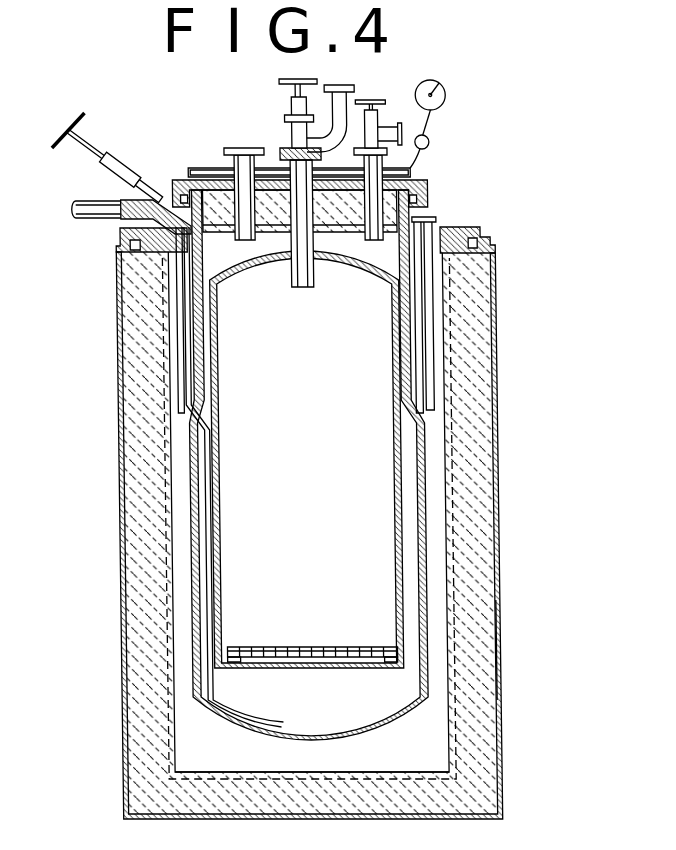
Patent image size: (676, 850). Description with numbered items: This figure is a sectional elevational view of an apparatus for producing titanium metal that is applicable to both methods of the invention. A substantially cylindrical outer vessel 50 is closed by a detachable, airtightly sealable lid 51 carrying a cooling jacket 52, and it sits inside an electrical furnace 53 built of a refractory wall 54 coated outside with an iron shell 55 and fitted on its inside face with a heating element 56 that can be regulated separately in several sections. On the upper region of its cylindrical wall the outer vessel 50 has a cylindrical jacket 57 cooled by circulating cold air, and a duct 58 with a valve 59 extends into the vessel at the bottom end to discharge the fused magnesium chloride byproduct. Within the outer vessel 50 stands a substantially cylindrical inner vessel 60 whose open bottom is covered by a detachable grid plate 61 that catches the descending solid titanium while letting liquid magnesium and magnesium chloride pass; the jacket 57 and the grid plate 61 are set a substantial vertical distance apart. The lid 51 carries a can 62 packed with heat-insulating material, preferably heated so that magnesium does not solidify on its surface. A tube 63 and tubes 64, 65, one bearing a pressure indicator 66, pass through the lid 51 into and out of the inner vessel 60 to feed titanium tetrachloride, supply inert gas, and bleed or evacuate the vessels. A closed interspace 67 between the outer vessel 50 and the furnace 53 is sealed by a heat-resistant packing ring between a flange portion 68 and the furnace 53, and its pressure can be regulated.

The outer vessel 50 is at (418, 520).
The lid 51 is at (411, 175).
The cooling jacket 52 is at (380, 156).
The electrical furnace 53 is at (497, 745).
The refractory wall 54 is at (464, 692).
The iron shell 55 is at (493, 658).
The heating element 56 is at (449, 480).
The cylindrical jacket 57 is at (175, 370).
The duct 58 is at (195, 633).
The valve 59 is at (86, 134).
The inner vessel 60 is at (391, 437).
The grid plate 61 is at (325, 647).
The can 62 is at (312, 248).
The tube 63 is at (301, 287).
The tube 64 is at (342, 240).
The tube 65 is at (182, 270).
The pressure indicator 66 is at (447, 93).
The closed interspace 67 is at (188, 752).
The flange portion 68 is at (120, 224).